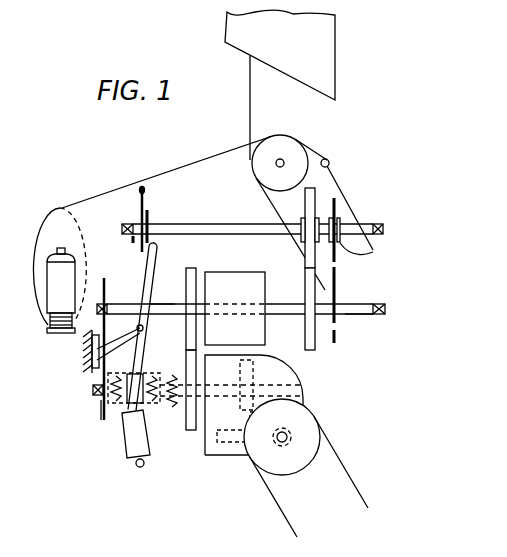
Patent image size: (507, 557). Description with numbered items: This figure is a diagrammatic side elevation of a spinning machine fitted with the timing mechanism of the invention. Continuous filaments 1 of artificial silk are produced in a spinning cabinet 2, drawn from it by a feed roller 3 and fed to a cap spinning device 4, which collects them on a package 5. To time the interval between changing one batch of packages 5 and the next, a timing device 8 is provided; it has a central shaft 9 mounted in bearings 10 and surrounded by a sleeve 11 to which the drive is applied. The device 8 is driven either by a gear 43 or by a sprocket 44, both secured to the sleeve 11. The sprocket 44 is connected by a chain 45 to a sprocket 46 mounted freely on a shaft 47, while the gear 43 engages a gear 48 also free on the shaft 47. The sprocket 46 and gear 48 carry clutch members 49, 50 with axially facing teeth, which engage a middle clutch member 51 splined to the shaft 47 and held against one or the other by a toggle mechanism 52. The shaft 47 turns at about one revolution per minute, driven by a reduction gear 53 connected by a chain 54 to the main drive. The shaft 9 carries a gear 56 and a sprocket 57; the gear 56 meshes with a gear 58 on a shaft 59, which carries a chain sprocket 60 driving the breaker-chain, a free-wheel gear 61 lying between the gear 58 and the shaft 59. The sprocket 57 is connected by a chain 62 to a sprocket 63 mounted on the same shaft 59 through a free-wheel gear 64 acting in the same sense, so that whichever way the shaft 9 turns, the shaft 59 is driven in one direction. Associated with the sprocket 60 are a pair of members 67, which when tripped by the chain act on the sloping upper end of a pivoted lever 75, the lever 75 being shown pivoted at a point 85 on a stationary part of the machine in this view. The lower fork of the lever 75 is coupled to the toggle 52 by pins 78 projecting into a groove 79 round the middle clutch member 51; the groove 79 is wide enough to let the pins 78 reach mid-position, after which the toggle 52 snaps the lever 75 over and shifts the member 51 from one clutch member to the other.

The continuous filaments 1 is at (222, 151).
The spinning cabinet 2 is at (225, 42).
The feed roller 3 is at (295, 148).
The cap spinning device 4 is at (57, 277).
The package 5 is at (50, 320).
The timing device 8 is at (238, 278).
The central shaft 9 is at (362, 316).
The bearings 10 is at (397, 298).
The sleeve 11 is at (162, 302).
The gear 43 is at (193, 278).
The sprocket 44 is at (107, 287).
The chain 45 is at (85, 350).
The sprocket 46 is at (88, 375).
The shaft 47 is at (100, 397).
The gear 48 is at (188, 367).
The clutch member 49 is at (110, 417).
The clutch member 50 is at (176, 410).
The middle clutch member 51 is at (150, 413).
The toggle mechanism 52 is at (127, 440).
The reduction gear 53 is at (223, 452).
The chain 54 is at (361, 491).
The gear 56 is at (316, 337).
The sprocket 57 is at (337, 337).
The gear 58 is at (312, 205).
The shaft 59 is at (204, 226).
The chain sprocket 60 is at (142, 188).
The free-wheel gear 61 is at (298, 242).
The chain 62 is at (337, 273).
The sprocket 63 is at (338, 208).
The free-wheel gear 64 is at (367, 252).
The members 67 is at (137, 218).
The lever 75 is at (160, 260).
The pins 78 is at (103, 407).
The groove 79 is at (138, 369).
The pivot 85 is at (143, 328).